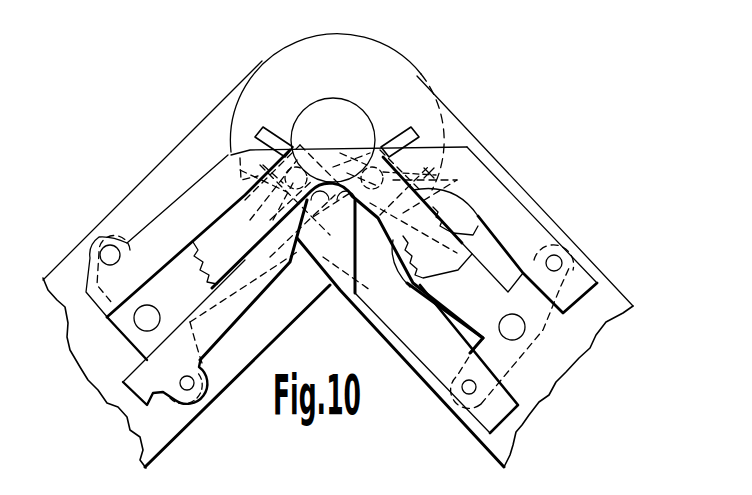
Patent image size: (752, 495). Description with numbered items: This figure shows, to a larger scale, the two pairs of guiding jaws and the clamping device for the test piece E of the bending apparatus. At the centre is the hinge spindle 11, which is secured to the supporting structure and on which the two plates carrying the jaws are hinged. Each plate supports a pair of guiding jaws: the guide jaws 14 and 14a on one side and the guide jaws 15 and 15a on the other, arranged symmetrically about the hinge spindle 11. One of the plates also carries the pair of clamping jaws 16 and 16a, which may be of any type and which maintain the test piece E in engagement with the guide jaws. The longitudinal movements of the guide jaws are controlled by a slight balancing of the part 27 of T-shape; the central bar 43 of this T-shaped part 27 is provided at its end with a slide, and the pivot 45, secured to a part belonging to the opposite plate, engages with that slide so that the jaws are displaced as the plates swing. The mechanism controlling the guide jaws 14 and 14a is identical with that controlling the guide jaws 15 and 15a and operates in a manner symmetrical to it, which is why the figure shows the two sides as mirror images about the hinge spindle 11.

The hinge spindle 11 is at (333, 140).
The test piece E is at (331, 158).
The guiding jaw 14 is at (166, 189).
The guiding jaw 14a is at (218, 360).
The guiding jaw 15 is at (508, 194).
The guiding jaw 15a is at (407, 352).
The clamping jaw 16 is at (445, 211).
The clamping jaw 16a is at (420, 263).
The part of T-shape 27 is at (329, 311).
The central bar 43 is at (277, 133).
The pivot 45 is at (243, 182).